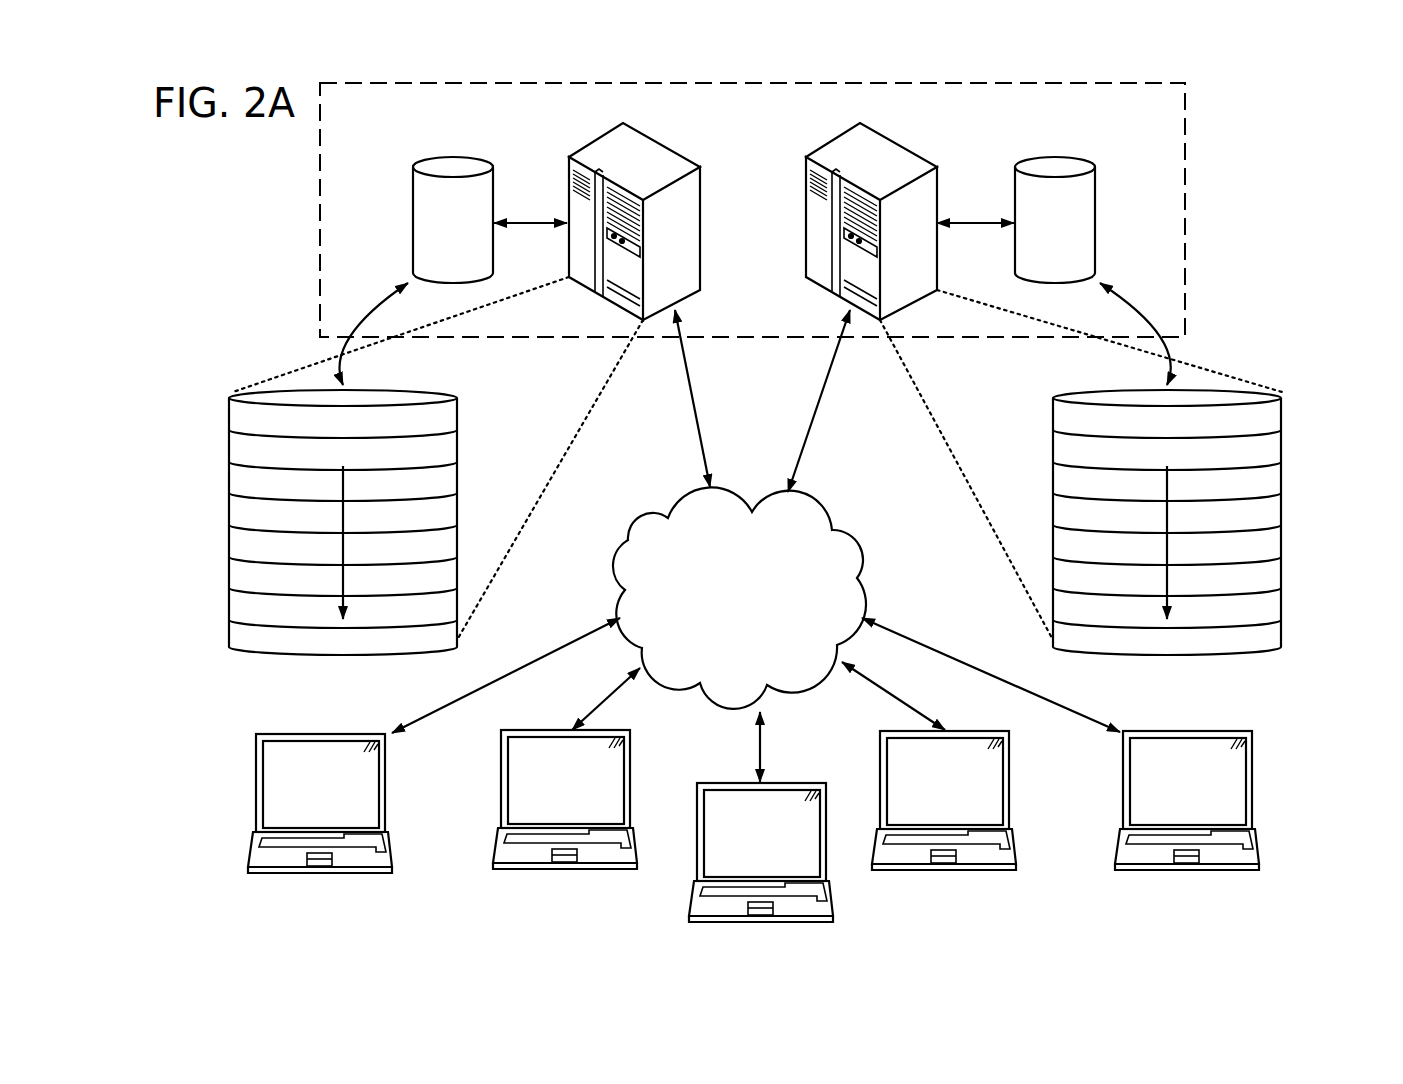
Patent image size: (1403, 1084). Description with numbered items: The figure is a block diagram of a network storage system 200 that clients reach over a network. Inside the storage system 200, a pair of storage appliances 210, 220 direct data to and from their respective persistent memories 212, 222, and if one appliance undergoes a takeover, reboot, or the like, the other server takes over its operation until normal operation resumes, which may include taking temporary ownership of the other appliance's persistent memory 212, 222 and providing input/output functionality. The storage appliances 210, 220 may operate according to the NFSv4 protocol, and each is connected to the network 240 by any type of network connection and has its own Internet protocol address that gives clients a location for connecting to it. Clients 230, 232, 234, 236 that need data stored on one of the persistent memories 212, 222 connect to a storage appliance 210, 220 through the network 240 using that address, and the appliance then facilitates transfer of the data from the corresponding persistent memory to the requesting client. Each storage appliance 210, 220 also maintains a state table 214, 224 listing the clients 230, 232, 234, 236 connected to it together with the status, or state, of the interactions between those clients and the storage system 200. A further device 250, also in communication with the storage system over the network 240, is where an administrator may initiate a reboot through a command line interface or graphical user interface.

The network storage system 200 is at (770, 147).
The storage appliance 210 is at (912, 152).
The persistent memory 212 is at (1095, 227).
The state table 214 is at (1282, 572).
The storage appliance 220 is at (593, 142).
The persistent memory 222 is at (412, 225).
The state table 224 is at (228, 572).
The client 230 is at (256, 780).
The client 232 is at (501, 780).
The client 234 is at (1008, 770).
The client 236 is at (1252, 768).
The network 240 is at (723, 622).
The device 250 is at (830, 922).